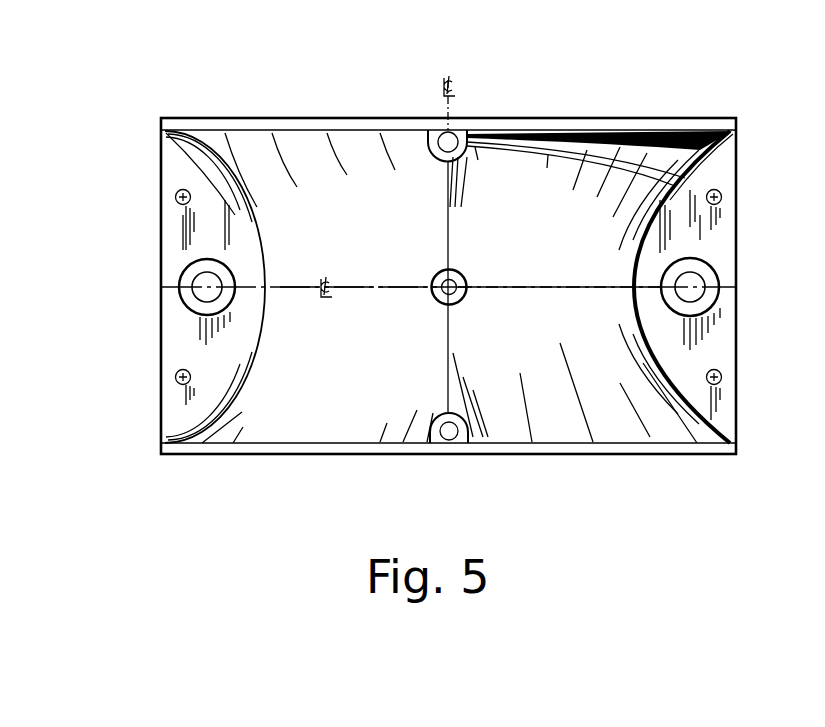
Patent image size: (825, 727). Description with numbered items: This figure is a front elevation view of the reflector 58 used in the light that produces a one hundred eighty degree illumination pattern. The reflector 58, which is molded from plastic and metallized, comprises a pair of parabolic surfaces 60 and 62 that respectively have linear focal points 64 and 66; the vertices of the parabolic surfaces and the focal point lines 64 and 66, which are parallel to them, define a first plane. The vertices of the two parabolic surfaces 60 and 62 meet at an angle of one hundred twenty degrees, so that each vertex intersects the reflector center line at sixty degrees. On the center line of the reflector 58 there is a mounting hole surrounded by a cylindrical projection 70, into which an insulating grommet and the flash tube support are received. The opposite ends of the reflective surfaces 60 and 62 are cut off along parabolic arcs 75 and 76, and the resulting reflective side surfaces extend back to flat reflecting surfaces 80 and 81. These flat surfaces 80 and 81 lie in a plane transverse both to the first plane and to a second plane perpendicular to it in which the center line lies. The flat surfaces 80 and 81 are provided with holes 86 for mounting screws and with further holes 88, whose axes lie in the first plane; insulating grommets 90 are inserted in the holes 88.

The reflector 58 is at (312, 466).
The parabolic surface 60 is at (378, 244).
The parabolic surface 62 is at (562, 244).
The linear focal point 64 is at (410, 288).
The linear focal point 66 is at (568, 288).
The cylindrical projection 70 is at (459, 276).
The parabolic arc 75 is at (205, 178).
The parabolic arc 76 is at (688, 177).
The flat reflecting surface 80 is at (181, 251).
The flat reflecting surface 81 is at (700, 237).
The holes 86 is at (722, 200).
The holes 88 is at (186, 304).
The insulating grommets 90 is at (187, 292).